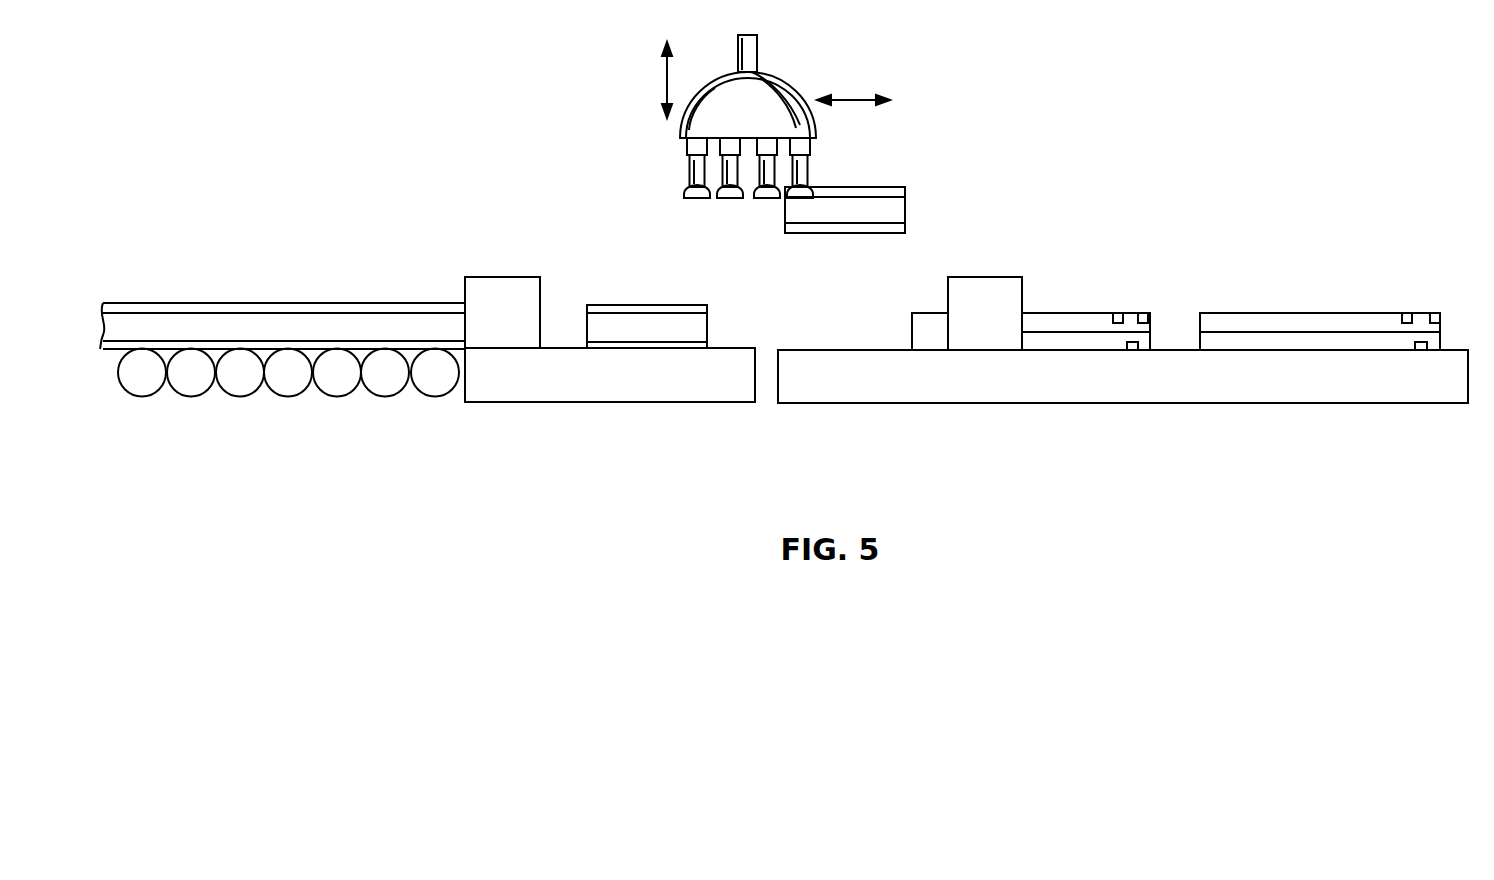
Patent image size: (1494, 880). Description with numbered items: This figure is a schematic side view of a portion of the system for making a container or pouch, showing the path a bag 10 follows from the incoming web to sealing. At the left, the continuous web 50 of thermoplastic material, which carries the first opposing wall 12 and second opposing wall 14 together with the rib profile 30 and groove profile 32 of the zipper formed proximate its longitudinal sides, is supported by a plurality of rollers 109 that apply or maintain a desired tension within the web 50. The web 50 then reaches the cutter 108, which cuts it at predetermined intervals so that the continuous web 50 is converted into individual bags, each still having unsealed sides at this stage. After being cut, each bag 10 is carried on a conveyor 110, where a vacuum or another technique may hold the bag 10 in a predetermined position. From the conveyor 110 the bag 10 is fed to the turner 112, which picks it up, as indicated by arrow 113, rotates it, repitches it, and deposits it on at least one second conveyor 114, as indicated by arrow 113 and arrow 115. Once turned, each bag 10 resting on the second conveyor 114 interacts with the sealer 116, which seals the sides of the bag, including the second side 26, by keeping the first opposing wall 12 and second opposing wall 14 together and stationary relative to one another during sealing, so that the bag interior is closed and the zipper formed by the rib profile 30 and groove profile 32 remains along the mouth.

The zippered bag 10 is at (672, 305).
The first opposing wall 12 is at (368, 350).
The second opposing wall 14 is at (375, 303).
The second side 26 is at (1077, 330).
The rib profile 30 is at (192, 343).
The groove profile 32 is at (168, 303).
The web 50 is at (242, 328).
The cutter 108 is at (523, 326).
The rollers 109 is at (265, 398).
The conveyor 110 is at (628, 388).
The turner 112 is at (765, 119).
The arrow 113 is at (665, 87).
The second conveyor 114 is at (1166, 390).
The arrow 115 is at (852, 97).
The sealer 116 is at (1010, 321).